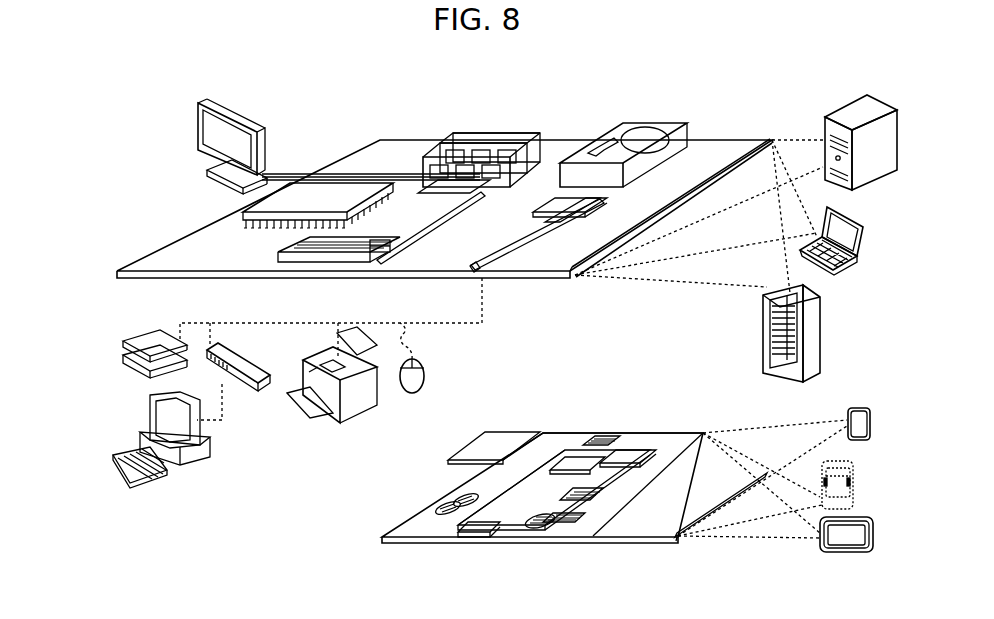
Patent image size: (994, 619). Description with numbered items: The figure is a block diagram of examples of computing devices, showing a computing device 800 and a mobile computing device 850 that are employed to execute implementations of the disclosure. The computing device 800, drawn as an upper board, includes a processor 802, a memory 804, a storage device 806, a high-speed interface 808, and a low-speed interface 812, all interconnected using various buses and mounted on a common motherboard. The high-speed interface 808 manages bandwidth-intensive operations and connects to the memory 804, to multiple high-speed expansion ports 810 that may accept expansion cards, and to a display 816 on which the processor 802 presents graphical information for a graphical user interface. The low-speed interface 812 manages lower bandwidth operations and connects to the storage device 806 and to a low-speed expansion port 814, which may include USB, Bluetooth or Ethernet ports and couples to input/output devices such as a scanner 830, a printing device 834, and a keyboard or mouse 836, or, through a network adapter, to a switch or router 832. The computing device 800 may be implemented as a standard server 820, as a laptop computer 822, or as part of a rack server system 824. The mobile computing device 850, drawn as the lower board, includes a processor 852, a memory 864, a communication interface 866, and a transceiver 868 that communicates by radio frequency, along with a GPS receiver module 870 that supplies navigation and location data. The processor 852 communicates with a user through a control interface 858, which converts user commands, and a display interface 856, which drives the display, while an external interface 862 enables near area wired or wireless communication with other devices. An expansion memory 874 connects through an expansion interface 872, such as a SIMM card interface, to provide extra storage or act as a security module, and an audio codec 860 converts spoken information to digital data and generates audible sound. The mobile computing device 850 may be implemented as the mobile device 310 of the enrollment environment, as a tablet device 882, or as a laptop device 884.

The computing device 800 is at (108, 140).
The processor 802 is at (243, 216).
The memory 804 is at (477, 133).
The storage device 806 is at (655, 125).
The high-speed interface 808 is at (447, 196).
The high-speed expansion ports 810 is at (280, 251).
The low-speed interface 812 is at (560, 202).
The low-speed expansion port 814 is at (488, 268).
The display 816 is at (200, 106).
The standard server 820 is at (822, 125).
The laptop computer 822 is at (855, 215).
The rack server system 824 is at (762, 330).
The scanner 830 is at (148, 336).
The switch or router 832 is at (246, 385).
The printing device 834 is at (360, 412).
The keyboard or mouse 836 is at (428, 378).
The mobile computing device 850 is at (344, 557).
The processor 852 is at (513, 507).
The display interface 856 is at (556, 522).
The control interface 858 is at (556, 516).
The audio codec 860 is at (572, 488).
The external interface 862 is at (473, 540).
The memory 864 is at (707, 507).
The communication interface 866 is at (582, 457).
The transceiver 868 is at (630, 452).
The GPS receiver module 870 is at (600, 437).
The expansion interface 872 is at (530, 441).
The expansion memory 874 is at (480, 443).
The tablet device 882 is at (858, 408).
The mobile device 310 is at (853, 470).
The laptop device 884 is at (873, 538).